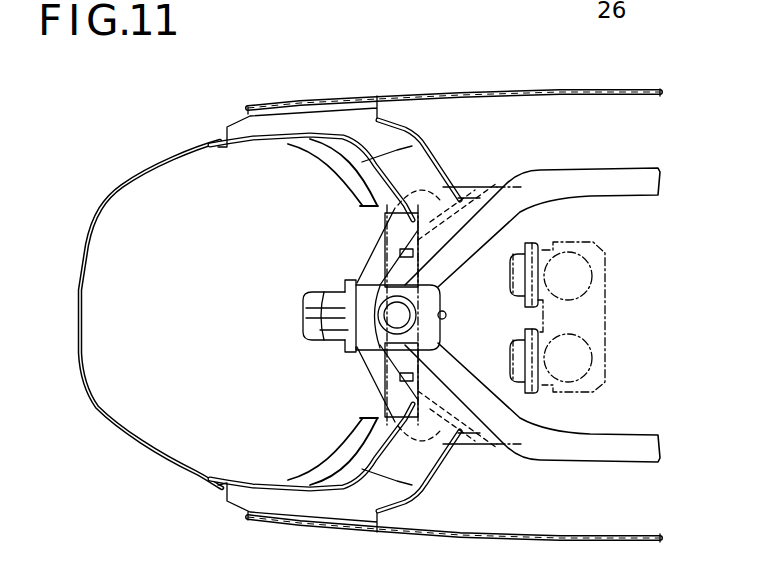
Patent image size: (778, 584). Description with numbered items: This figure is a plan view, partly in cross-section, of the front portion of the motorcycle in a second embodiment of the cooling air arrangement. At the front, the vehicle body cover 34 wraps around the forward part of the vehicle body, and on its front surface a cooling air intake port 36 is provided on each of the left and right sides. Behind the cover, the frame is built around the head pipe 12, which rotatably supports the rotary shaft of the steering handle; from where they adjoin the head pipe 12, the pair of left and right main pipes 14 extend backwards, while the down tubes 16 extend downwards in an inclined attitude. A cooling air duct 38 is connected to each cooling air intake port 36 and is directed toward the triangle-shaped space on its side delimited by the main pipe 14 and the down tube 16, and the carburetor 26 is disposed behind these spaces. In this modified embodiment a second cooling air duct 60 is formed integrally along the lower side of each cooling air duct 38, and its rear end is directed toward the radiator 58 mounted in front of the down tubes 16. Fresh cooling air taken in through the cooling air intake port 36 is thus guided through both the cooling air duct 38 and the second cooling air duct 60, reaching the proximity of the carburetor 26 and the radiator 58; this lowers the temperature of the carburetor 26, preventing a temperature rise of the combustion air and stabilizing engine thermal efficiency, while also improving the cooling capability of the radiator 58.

The head pipe 12 is at (323, 343).
The main pipe 14 is at (632, 172).
The down tube 16 is at (367, 269).
The carburetor 26 is at (600, 312).
The vehicle body cover 34 is at (151, 162).
The cooling air intake port 36 is at (247, 117).
The cooling air duct 38 is at (400, 123).
The radiator 58 is at (385, 222).
The second cooling air duct 60 is at (331, 166).